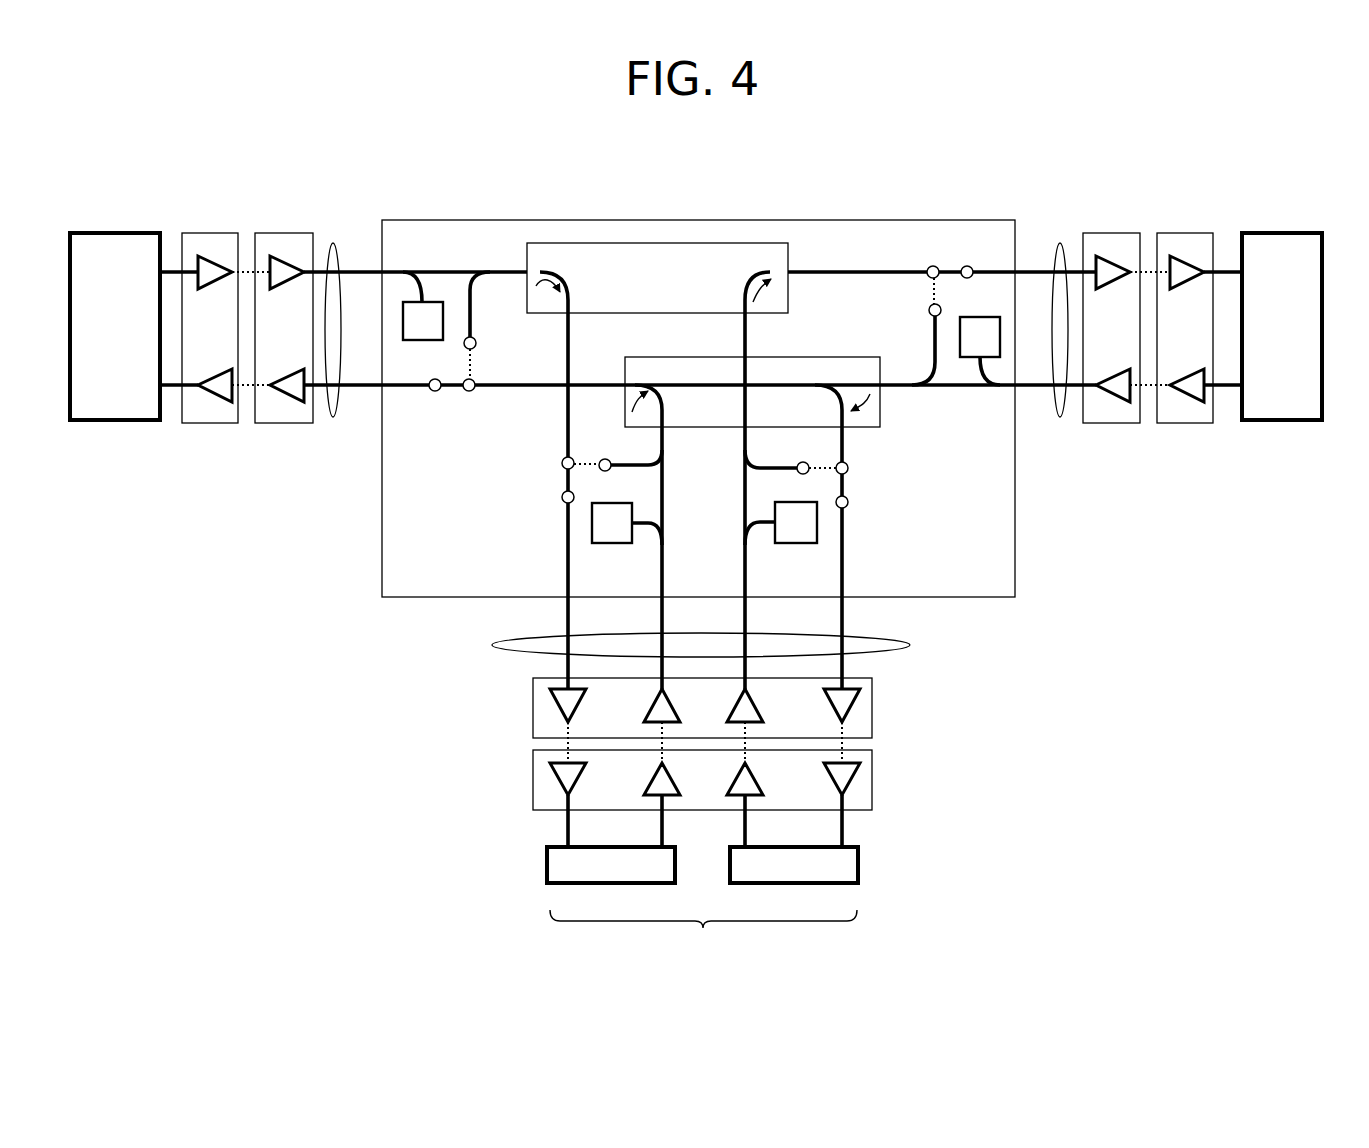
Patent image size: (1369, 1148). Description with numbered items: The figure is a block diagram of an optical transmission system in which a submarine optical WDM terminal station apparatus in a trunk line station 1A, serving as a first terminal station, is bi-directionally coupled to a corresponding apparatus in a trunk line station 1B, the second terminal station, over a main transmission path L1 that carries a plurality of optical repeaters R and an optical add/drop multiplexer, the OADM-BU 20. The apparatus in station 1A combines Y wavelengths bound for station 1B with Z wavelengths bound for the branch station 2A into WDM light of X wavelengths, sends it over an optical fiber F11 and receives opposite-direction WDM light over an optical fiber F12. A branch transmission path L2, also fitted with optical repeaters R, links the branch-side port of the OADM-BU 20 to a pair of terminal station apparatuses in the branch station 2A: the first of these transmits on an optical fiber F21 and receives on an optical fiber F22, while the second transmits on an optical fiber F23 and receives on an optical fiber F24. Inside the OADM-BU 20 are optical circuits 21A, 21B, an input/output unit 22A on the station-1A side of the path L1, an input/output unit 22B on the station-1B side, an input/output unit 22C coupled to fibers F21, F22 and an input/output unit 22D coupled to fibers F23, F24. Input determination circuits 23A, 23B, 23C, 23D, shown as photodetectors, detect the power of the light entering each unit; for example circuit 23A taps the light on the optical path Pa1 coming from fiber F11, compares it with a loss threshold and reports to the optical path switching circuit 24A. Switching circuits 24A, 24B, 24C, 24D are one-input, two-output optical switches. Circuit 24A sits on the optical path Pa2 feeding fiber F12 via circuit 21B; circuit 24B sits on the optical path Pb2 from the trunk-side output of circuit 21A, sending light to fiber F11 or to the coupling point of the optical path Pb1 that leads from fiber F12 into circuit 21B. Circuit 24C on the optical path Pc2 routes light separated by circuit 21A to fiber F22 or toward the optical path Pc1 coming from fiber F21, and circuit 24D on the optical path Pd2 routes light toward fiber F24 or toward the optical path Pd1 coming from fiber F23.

The trunk line station 1A is at (115, 328).
The trunk line station 1B is at (1282, 328).
The optical repeater R is at (249, 207).
The main transmission path L1 is at (334, 245).
The branch transmission path L2 is at (912, 645).
The optical fiber F11 is at (363, 274).
The optical fiber F12 is at (362, 384).
The optical fiber F21 is at (660, 645).
The optical fiber F22 is at (570, 622).
The optical fiber F23 is at (748, 622).
The optical fiber F24 is at (840, 645).
The optical add/drop multiplexer (OADM-BU) 20 is at (562, 220).
The optical circuit 21A is at (650, 313).
The optical circuit 21B is at (850, 357).
The input/output unit 22A is at (446, 396).
The input/output unit 22B is at (955, 370).
The input/output unit 22C is at (562, 512).
The input/output unit 22D is at (851, 513).
The input determination circuit 23A is at (420, 341).
The input determination circuit 23B is at (986, 317).
The input determination circuit 23C is at (610, 544).
The input determination circuit 23D is at (810, 545).
The optical path switching circuit 24A is at (470, 392).
The optical path switching circuit 24B is at (930, 268).
The optical path switching circuit 24C is at (562, 460).
The optical path switching circuit 24D is at (850, 465).
The optical path Pa1 is at (388, 270).
The optical path Pa2 is at (542, 384).
The optical path Pb1 is at (1006, 386).
The optical path Pb2 is at (835, 271).
The optical path Pc1 is at (664, 585).
The optical path Pc2 is at (570, 422).
The optical path Pd1 is at (731, 434).
The optical path Pd2 is at (840, 450).
The branch station 2A is at (702, 881).